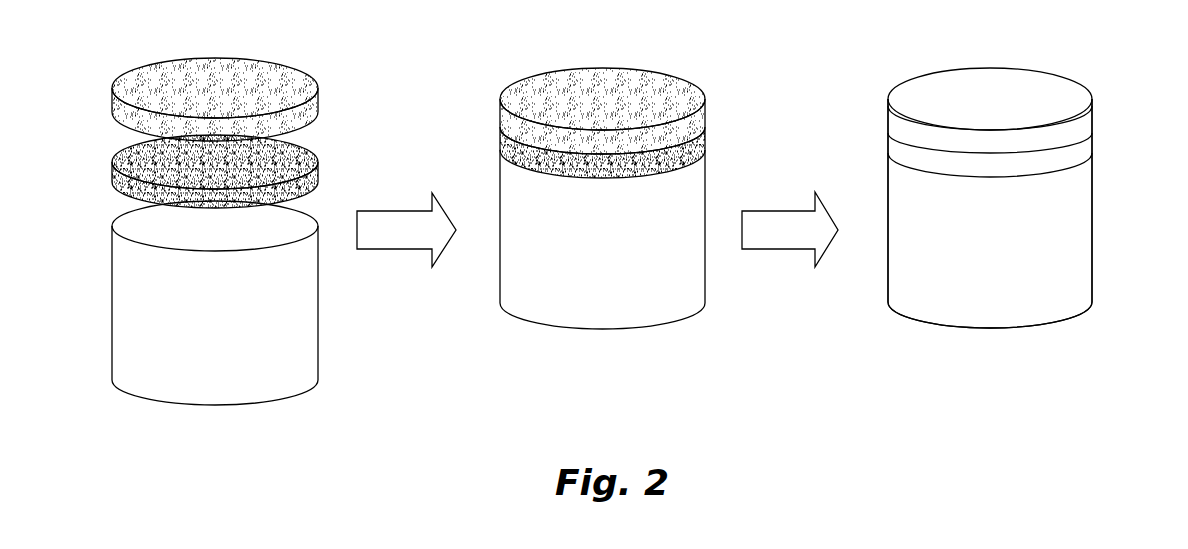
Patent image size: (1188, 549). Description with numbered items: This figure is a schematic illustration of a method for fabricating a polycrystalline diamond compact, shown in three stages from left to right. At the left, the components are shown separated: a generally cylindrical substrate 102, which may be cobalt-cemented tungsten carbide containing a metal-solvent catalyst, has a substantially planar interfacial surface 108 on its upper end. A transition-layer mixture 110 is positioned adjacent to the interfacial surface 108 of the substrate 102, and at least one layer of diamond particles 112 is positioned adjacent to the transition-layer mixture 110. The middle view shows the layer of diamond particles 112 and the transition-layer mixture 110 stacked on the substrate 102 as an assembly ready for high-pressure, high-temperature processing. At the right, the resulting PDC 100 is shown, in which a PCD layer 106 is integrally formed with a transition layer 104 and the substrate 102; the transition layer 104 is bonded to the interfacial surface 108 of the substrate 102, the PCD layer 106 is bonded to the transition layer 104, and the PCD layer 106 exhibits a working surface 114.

The PDC 100 is at (1017, 180).
The substrate 102 is at (229, 388).
The transition layer 104 is at (1085, 145).
The PCD layer 106 is at (917, 102).
The interfacial surface 108 is at (127, 222).
The transition-layer mixture 110 is at (318, 162).
The layer of diamond particles 112 is at (318, 95).
The working surface 114 is at (978, 88).